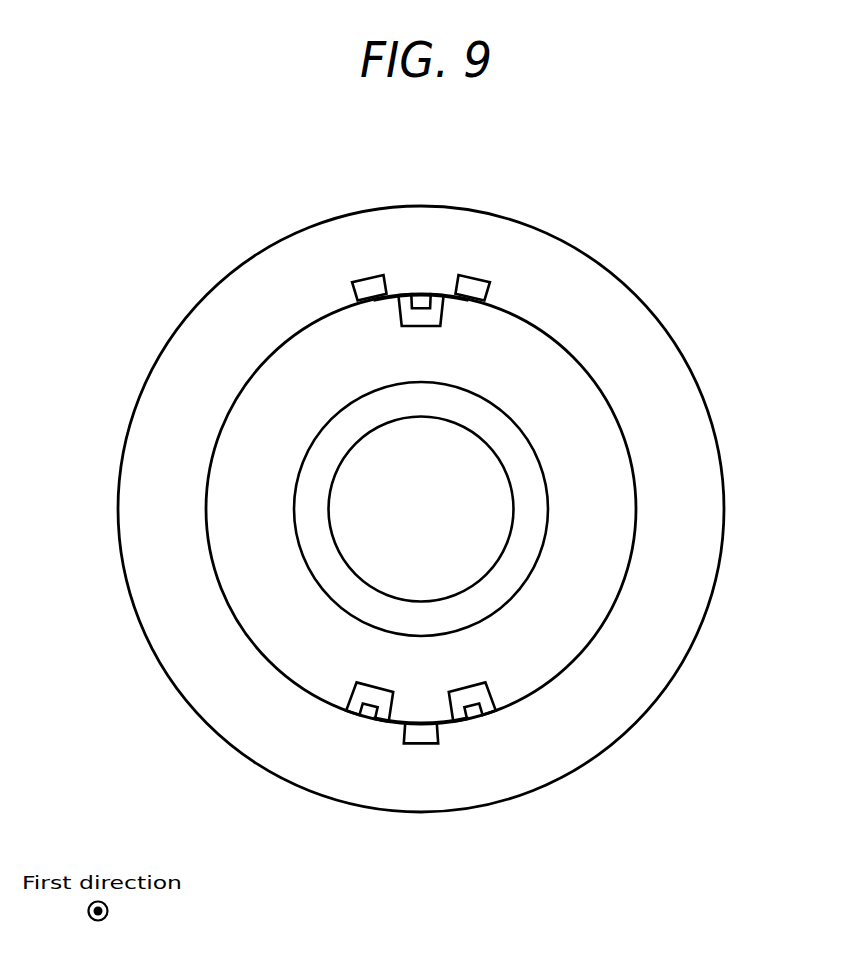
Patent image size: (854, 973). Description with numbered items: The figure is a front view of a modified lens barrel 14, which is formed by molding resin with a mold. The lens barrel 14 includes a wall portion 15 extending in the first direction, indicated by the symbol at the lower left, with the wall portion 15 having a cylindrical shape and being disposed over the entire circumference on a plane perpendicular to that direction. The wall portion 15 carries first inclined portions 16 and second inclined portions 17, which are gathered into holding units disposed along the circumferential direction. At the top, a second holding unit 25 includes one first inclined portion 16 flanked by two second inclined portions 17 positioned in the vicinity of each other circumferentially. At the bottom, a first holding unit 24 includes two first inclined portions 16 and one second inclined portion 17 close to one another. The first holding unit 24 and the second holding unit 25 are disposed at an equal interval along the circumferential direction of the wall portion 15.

The lens barrel 14 is at (699, 388).
The wall portion 15 is at (677, 635).
The first inclined portion 16 is at (407, 292).
The second inclined portion 17 is at (364, 281).
The first holding unit 24 is at (362, 861).
The second holding unit 25 is at (487, 145).